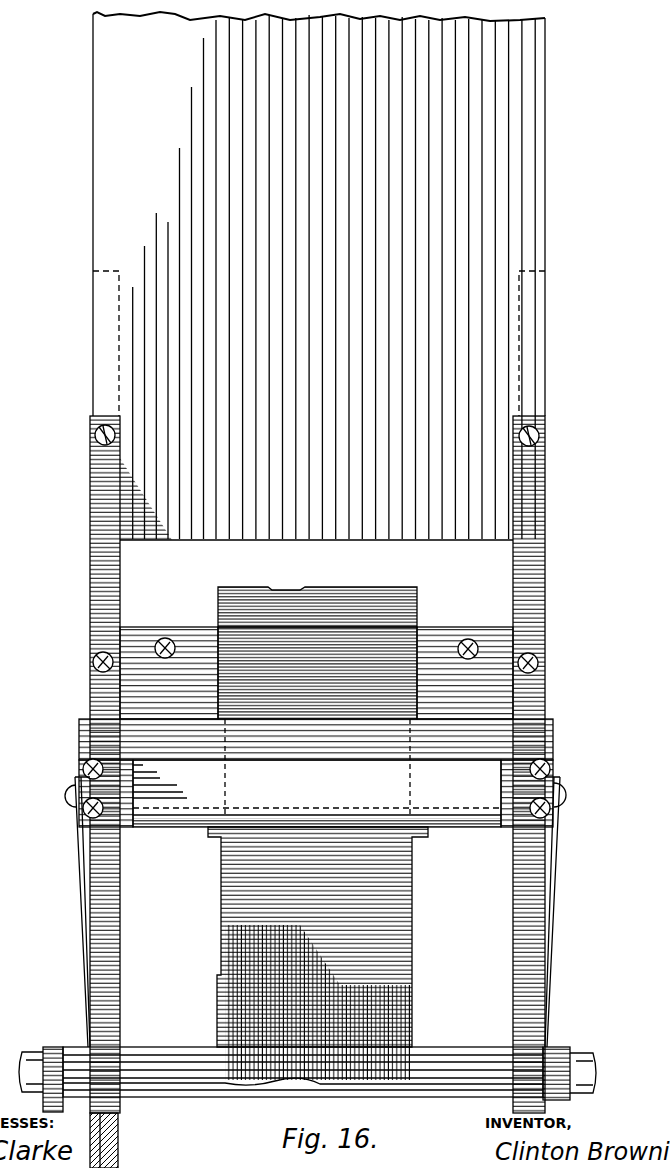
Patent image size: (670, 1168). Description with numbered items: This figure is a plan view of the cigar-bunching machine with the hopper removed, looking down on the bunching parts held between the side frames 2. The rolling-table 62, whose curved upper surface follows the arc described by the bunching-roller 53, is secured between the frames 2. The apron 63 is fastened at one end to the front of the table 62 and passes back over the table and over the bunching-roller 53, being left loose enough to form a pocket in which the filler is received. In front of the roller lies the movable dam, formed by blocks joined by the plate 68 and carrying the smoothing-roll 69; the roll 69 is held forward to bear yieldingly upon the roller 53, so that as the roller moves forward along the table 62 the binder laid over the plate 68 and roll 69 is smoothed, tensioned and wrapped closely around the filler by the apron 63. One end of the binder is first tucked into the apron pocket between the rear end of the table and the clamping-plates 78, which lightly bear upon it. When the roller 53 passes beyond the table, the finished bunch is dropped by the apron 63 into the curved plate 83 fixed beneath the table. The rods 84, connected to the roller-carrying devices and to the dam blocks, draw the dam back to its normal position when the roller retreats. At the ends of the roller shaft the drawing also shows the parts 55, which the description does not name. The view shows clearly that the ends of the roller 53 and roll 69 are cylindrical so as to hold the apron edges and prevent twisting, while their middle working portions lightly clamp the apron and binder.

The frames 2 is at (88, 966).
The bunching-roller 53 is at (307, 1058).
The nut 55 is at (314, 1064).
The rolling-table 62 is at (316, 673).
The apron 63 is at (318, 937).
The plate 68 is at (316, 773).
The smoothing-roll 69 is at (463, 830).
The clamping-plates 78 is at (220, 950).
The curved plate 83 is at (315, 606).
The rods 84 is at (80, 885).